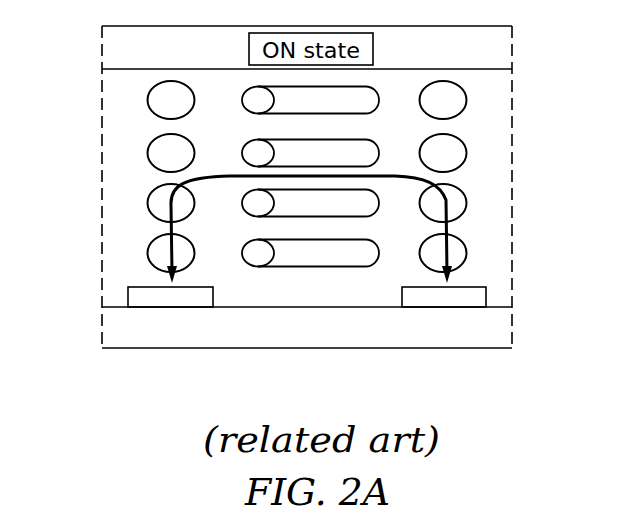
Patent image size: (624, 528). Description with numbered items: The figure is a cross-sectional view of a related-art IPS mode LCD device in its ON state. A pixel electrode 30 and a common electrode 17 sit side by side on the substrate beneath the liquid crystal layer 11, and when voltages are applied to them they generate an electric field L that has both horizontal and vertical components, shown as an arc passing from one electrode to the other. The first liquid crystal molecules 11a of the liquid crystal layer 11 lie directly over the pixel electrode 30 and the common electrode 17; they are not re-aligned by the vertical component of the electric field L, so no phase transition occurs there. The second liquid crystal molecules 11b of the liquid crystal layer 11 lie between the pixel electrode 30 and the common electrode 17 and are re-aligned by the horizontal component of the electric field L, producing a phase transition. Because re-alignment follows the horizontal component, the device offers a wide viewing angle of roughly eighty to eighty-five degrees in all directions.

The liquid crystal layer 11 is at (321, 188).
The first liquid crystal molecules 11a is at (165, 158).
The second liquid crystal molecules 11b is at (253, 148).
The common electrode 17 is at (443, 298).
The pixel electrode 30 is at (177, 298).
The electric field L is at (440, 176).